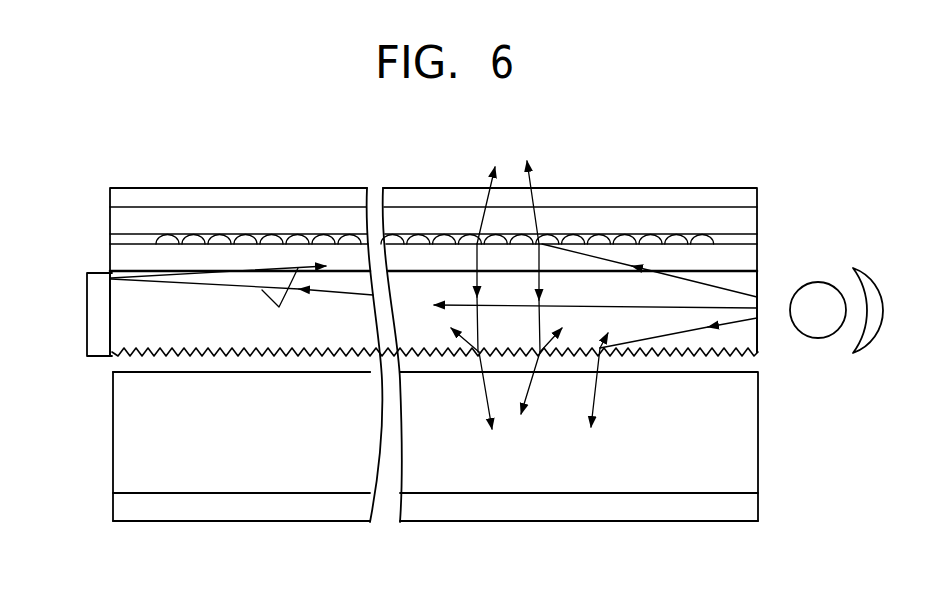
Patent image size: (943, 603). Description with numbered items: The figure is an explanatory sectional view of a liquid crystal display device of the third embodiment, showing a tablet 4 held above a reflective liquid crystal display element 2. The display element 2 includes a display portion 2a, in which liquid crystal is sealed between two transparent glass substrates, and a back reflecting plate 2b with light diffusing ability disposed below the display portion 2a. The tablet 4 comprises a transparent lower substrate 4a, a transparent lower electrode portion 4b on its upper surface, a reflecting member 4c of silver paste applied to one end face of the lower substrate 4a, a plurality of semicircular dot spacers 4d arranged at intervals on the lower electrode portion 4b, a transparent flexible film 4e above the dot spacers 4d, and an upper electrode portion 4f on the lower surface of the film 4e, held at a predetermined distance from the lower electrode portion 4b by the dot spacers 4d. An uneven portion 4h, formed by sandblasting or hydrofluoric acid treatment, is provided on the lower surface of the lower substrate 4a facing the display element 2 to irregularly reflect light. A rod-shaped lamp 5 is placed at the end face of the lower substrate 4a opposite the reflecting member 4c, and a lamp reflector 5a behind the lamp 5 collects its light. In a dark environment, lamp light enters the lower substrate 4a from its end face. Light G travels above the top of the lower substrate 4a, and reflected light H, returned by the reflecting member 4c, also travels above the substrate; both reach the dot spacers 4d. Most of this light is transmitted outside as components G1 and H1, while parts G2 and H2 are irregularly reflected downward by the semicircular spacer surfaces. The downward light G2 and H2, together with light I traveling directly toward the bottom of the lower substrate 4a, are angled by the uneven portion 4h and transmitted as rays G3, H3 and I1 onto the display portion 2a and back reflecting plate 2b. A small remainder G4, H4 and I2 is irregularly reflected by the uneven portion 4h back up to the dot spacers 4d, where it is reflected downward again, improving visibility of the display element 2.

The reflective liquid crystal display element 2 is at (709, 524).
The display portion 2a is at (140, 457).
The back reflecting plate 2b is at (173, 508).
The tablet 4 is at (731, 186).
The lower substrate 4a is at (120, 338).
The lower electrode portion 4b is at (127, 258).
The reflecting member 4c is at (98, 307).
The dot spacers 4d is at (193, 238).
The film 4e is at (142, 197).
The upper electrode portion 4f is at (127, 218).
The uneven portion 4h is at (180, 360).
The lamp 5 is at (818, 291).
The lamp reflector 5a is at (867, 344).
The light G is at (713, 287).
The reflected light H is at (727, 308).
The light I is at (733, 323).
The transmitted light G1 is at (532, 187).
The irregularly reflected light G2 is at (540, 290).
The transmitted light G3 is at (532, 400).
The irregularly reflected light G4 is at (567, 332).
The transmitted light H1 is at (490, 189).
The irregularly reflected light H2 is at (480, 257).
The transmitted light H3 is at (492, 408).
The irregularly reflected light H4 is at (448, 336).
The transmitted light I1 is at (591, 405).
The irregularly reflected light I2 is at (615, 329).